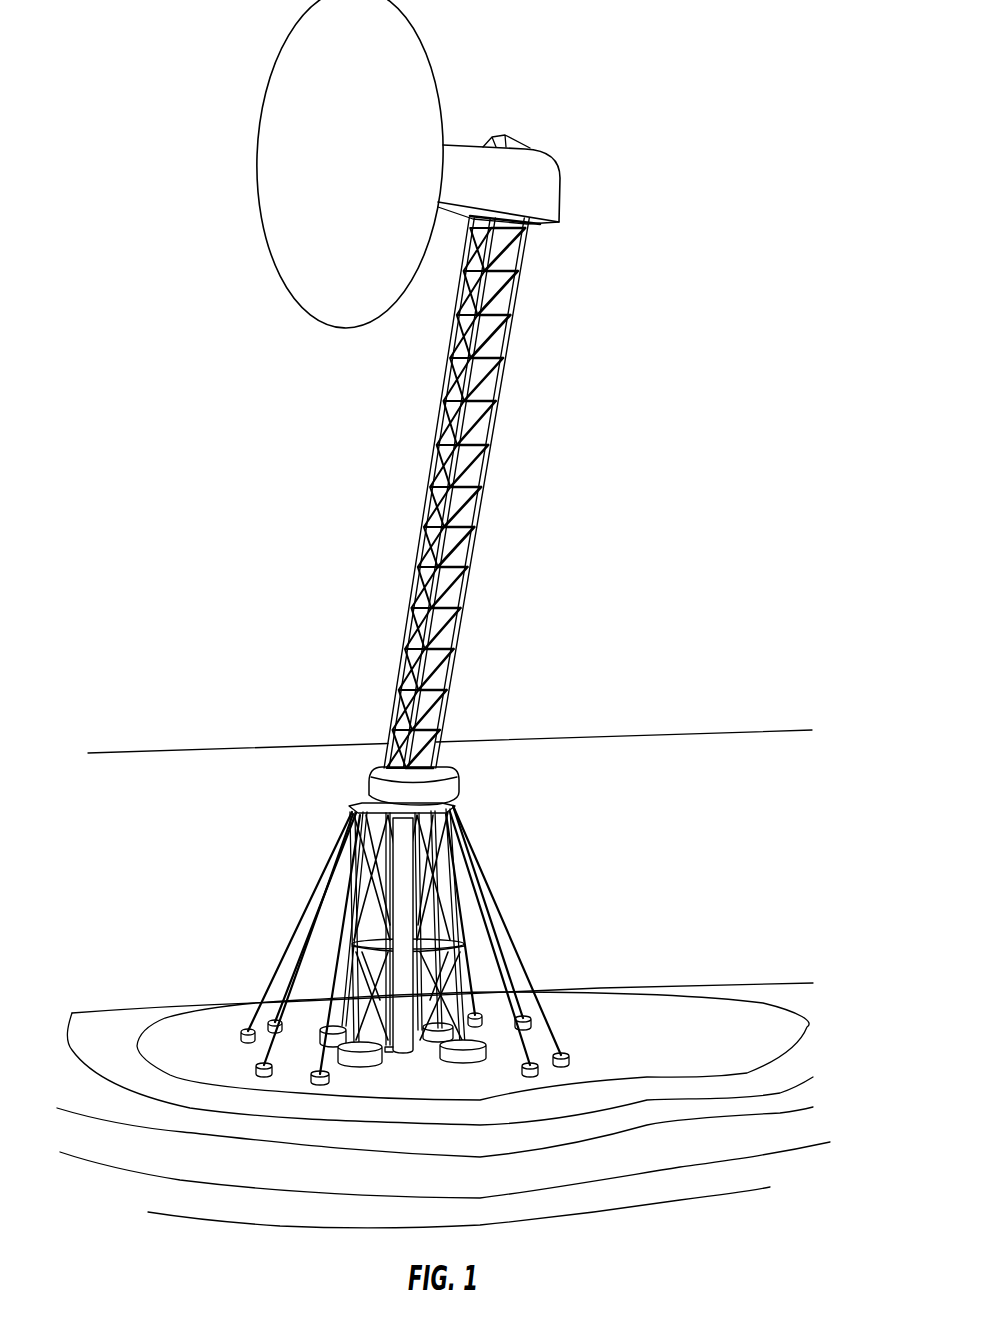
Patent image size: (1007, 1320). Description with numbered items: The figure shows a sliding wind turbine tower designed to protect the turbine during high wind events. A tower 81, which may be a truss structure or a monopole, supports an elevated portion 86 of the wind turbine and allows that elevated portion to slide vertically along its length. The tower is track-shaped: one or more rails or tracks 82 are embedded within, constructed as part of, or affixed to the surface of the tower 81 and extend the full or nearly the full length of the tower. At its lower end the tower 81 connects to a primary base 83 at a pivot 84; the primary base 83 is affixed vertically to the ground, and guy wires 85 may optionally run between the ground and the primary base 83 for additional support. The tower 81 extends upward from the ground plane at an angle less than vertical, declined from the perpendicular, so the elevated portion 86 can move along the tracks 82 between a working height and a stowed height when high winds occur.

The tower 81 is at (456, 493).
The tracks 82 is at (416, 687).
The primary base 83 is at (466, 935).
The pivot 84 is at (455, 783).
The guy wires 85 is at (308, 908).
The elevated portion 86 is at (545, 185).